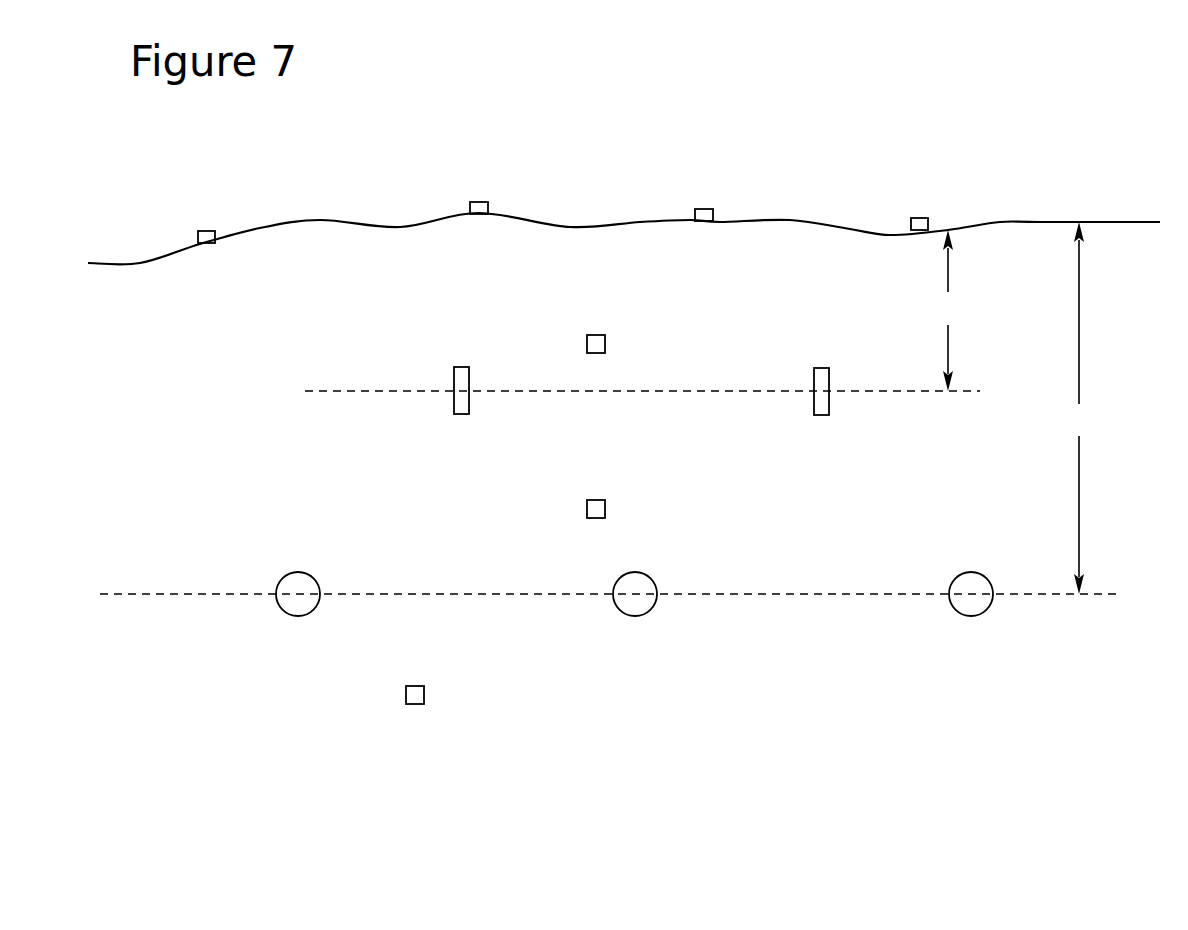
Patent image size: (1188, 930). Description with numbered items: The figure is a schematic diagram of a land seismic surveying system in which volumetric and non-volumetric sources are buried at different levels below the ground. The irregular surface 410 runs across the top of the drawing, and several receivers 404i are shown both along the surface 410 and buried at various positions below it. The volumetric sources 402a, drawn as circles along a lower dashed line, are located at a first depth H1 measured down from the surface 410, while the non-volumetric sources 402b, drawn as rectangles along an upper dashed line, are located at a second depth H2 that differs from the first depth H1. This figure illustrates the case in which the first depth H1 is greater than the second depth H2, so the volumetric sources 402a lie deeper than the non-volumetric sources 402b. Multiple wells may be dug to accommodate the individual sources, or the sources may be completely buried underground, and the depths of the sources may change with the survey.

The surface 410 is at (1022, 222).
The volumetric source 402a is at (315, 578).
The non-volumetric source 402b is at (462, 367).
The receiver 404i is at (595, 335).
The first depth H1 is at (1086, 408).
The second depth H2 is at (955, 310).